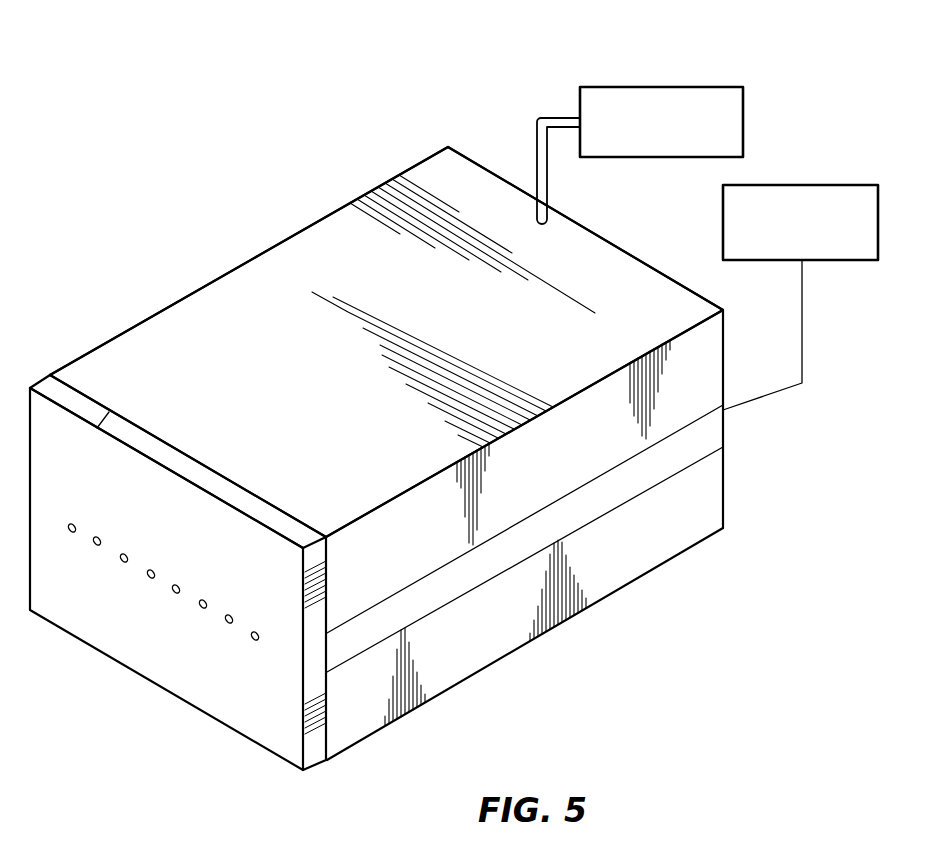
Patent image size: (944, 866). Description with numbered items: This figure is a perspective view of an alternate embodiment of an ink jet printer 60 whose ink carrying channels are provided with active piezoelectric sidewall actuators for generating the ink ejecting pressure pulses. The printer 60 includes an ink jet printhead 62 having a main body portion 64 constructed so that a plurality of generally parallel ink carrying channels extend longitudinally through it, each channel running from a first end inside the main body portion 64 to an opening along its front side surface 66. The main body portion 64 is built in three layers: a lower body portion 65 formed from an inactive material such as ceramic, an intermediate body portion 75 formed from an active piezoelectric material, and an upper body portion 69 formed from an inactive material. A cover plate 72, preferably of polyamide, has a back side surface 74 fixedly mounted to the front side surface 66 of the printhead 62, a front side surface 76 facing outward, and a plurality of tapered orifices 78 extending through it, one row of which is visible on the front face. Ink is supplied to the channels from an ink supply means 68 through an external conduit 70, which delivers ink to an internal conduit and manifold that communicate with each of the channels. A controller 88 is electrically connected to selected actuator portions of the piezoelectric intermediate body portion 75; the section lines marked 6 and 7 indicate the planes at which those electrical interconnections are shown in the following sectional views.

The ink jet printer 60 is at (777, 163).
The ink jet printhead 62 is at (449, 147).
The main body portion 64 is at (260, 258).
The front side surface 66 is at (86, 392).
The ink supply means 68 is at (673, 87).
The upper body portion 69 is at (727, 357).
The external conduit 70 is at (547, 173).
The cover plate 72 is at (45, 378).
The back side surface 74 is at (97, 430).
The intermediate body portion 75 is at (725, 424).
The front side surface 76 is at (122, 442).
The tapered orifices 78 is at (97, 545).
The controller 88 is at (828, 185).
The lower body portion 65 is at (726, 492).
The section line 6- 6 is at (245, 406).
The section line 7- 7 is at (158, 548).